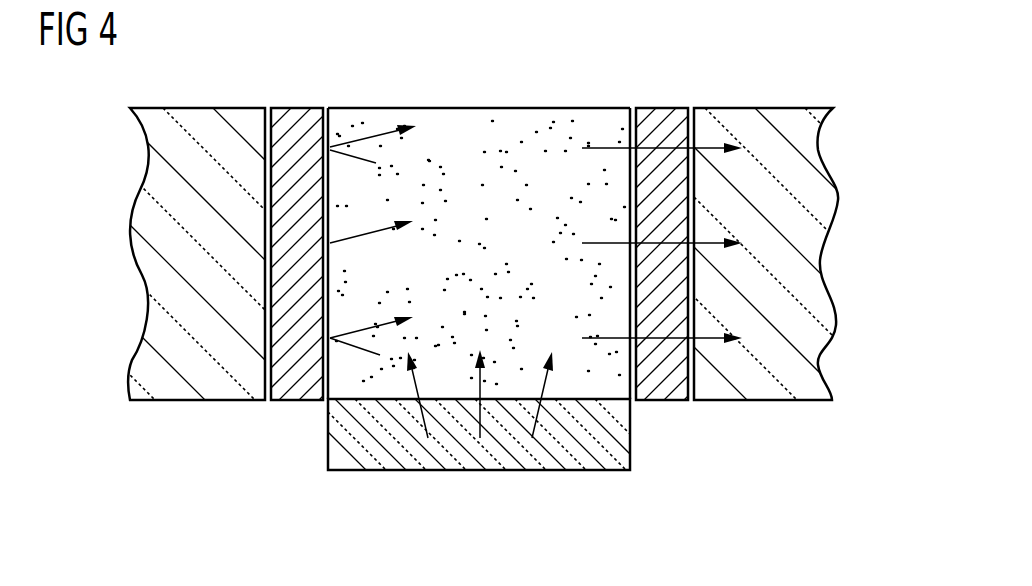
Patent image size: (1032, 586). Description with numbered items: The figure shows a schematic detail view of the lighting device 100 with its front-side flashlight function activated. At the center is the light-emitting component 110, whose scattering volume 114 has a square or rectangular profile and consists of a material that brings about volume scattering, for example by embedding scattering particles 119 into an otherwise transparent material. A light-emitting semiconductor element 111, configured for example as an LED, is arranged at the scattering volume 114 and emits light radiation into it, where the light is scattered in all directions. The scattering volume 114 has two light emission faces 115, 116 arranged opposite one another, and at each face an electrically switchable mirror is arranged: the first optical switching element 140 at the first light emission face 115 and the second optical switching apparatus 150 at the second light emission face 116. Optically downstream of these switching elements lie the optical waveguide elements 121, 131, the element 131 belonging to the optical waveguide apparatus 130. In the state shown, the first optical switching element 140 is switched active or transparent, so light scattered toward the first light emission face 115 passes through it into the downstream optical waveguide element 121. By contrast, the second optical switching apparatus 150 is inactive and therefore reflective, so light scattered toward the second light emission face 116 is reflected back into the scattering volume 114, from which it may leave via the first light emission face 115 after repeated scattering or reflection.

The lighting device 100 is at (516, 286).
The light-emitting component 110 is at (518, 302).
The light-emitting semiconductor element 111 is at (593, 454).
The scattering volume 114 is at (441, 128).
The first light emission face 115 is at (640, 126).
The second light emission face 116 is at (324, 120).
The scattering particles 119 is at (477, 140).
The optical waveguide element 121 is at (765, 382).
The optical waveguide apparatus 130 is at (516, 306).
The optical waveguide element 131 is at (200, 382).
The first optical switching element 140 is at (657, 125).
The second optical switching apparatus 150 is at (301, 128).